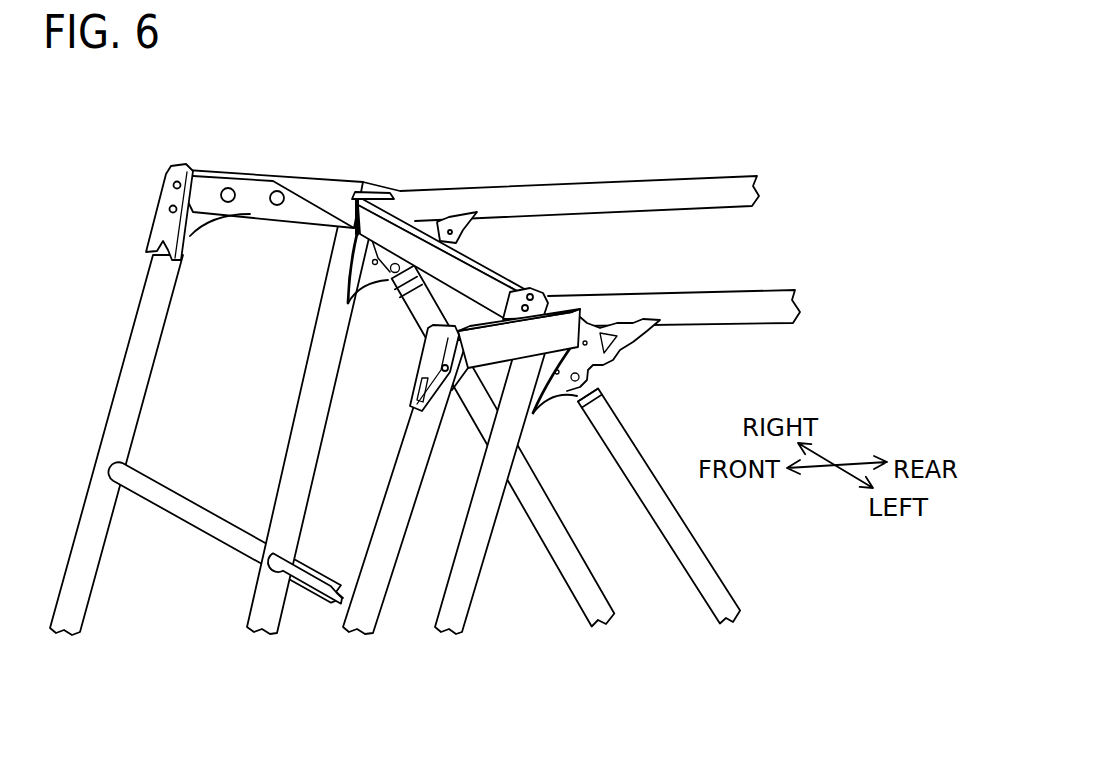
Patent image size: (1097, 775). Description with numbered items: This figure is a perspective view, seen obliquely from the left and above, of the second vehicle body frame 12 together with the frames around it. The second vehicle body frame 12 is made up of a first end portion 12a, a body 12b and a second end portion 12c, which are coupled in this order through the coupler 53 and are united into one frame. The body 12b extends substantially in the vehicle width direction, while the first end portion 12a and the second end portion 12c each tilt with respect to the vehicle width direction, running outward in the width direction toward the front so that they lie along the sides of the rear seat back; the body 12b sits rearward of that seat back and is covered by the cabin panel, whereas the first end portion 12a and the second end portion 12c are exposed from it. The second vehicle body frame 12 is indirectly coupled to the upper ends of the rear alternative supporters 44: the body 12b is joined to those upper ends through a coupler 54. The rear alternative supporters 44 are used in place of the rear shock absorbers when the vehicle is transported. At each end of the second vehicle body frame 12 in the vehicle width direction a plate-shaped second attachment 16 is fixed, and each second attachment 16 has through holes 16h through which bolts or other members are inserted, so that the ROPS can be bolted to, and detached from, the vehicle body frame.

The second vehicle body frame 12 is at (310, 175).
The first end portion 12a is at (237, 177).
The body 12b is at (488, 264).
The second end portion 12c is at (510, 364).
The second attachment 16 is at (150, 228).
The through hole 16h is at (170, 208).
The rear alternative supporter 44 is at (733, 618).
The coupler 53 is at (340, 215).
The coupler 54 is at (367, 287).